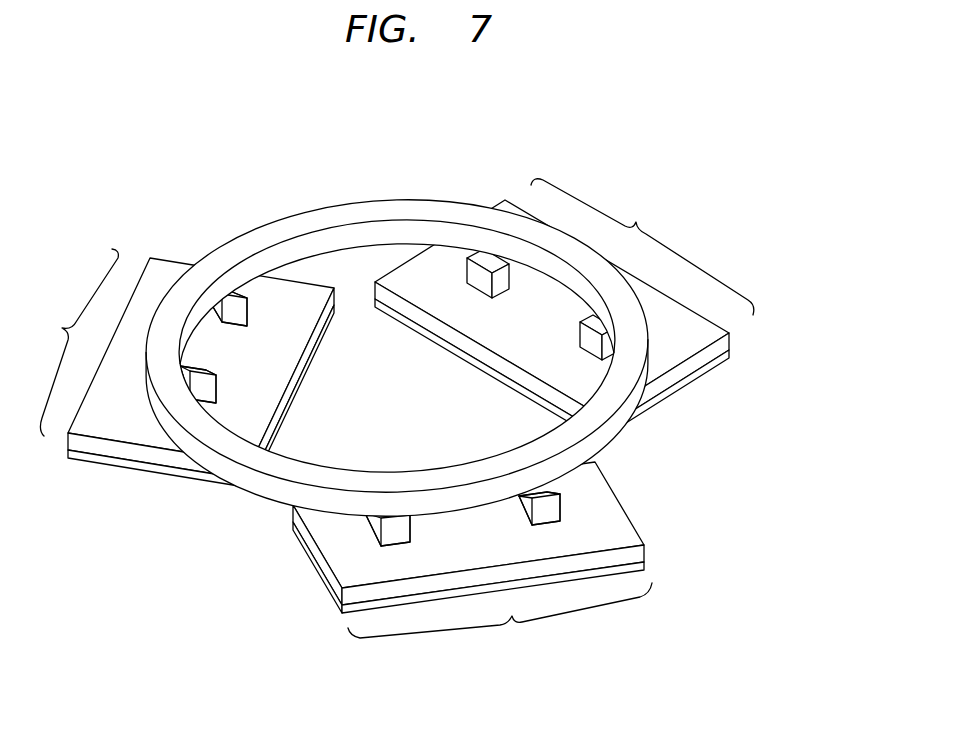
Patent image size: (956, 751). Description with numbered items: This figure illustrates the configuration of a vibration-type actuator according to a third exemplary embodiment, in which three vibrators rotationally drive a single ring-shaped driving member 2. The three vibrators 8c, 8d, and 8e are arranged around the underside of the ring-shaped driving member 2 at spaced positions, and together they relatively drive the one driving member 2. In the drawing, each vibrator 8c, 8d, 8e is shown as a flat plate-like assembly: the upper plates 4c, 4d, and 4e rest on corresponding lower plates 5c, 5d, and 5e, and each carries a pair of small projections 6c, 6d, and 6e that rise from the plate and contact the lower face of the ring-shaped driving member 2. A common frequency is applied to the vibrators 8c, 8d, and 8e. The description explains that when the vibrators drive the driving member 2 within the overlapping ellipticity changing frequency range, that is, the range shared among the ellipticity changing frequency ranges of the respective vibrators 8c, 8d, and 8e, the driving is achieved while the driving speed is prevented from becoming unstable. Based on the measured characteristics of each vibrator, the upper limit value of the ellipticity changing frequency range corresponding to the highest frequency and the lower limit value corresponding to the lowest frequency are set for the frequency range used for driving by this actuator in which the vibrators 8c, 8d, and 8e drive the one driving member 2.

The driving member 2 is at (425, 205).
The support plate 4c is at (628, 527).
The support plate 4d is at (735, 343).
The support plate 4e is at (323, 273).
The base plate 5c is at (645, 567).
The base plate 5d is at (732, 362).
The base plate 5e is at (302, 384).
The projection 6c is at (568, 508).
The projection 6d is at (478, 282).
The projection 6e is at (253, 303).
The vibrator 8c is at (500, 617).
The vibrator 8d is at (642, 247).
The vibrator 8e is at (75, 342).